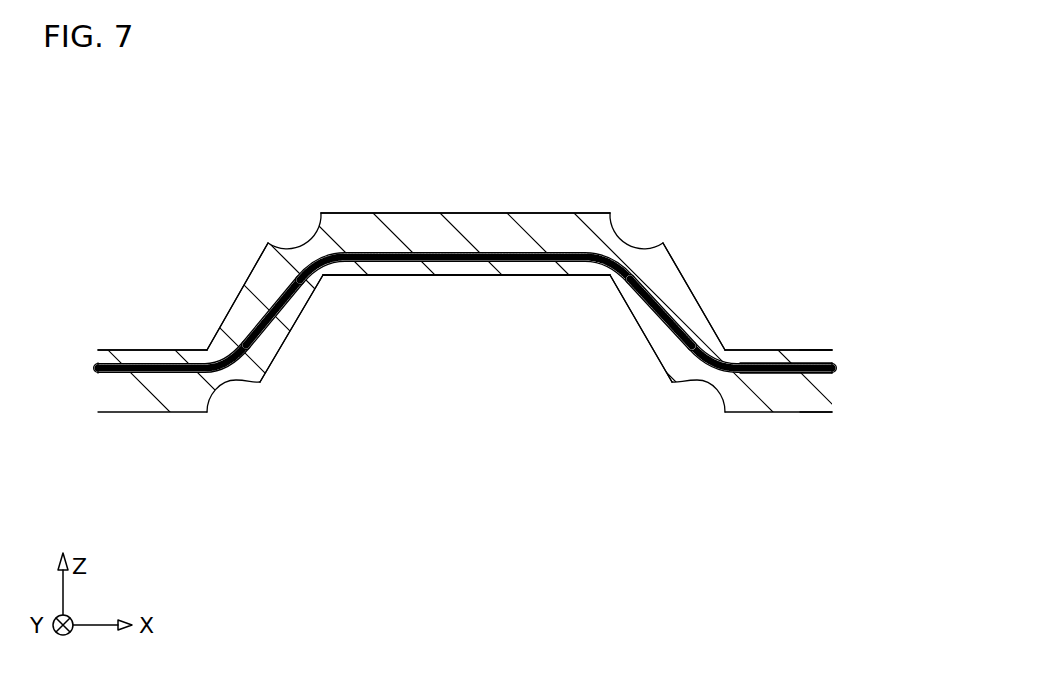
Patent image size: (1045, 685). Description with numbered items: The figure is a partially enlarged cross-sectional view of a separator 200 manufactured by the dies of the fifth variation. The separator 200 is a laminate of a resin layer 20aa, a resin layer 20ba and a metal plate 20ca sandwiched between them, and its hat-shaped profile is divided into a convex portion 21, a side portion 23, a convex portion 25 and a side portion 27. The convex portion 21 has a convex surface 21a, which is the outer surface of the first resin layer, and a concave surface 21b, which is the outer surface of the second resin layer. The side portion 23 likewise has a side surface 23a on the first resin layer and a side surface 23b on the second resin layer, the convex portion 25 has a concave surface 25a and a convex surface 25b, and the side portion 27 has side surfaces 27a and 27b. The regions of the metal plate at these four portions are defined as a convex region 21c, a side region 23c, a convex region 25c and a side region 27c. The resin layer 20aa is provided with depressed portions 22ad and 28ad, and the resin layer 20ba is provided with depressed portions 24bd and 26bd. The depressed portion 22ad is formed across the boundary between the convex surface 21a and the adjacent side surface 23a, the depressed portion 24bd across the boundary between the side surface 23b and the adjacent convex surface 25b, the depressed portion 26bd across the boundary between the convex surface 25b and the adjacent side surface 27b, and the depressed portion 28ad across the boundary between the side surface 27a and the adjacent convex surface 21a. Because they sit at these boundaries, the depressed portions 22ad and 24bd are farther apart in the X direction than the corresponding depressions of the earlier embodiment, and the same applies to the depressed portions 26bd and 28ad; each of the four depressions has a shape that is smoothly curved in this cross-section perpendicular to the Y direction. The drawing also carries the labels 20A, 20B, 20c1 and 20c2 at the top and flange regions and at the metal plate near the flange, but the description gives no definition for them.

The separator 200 is at (811, 206).
The top portion region 20A is at (489, 375).
The flange portion region 20B is at (162, 266).
The resin layer 20aa is at (846, 394).
The resin layer 20ba is at (846, 357).
The metal plate 20ca is at (848, 372).
The intermediate layer first portion 20c1 is at (773, 375).
The intermediate layer second portion 20c2 is at (808, 362).
The convex portion 21 is at (140, 392).
The convex surface 21a is at (190, 412).
The concave surface 21b is at (148, 350).
The convex region 21c is at (97, 368).
The depressed portion 22ad is at (233, 384).
The side portion 23 is at (262, 290).
The side surface 23a is at (277, 357).
The side surface 23b is at (224, 322).
The side region 23c is at (277, 318).
The depressed portion 24bd is at (287, 248).
The convex portion 25 is at (528, 232).
The concave surface 25a is at (520, 276).
The convex surface 25b is at (505, 212).
The convex region 25c is at (475, 251).
The depressed portion 26bd is at (653, 243).
The side portion 27 is at (680, 295).
The side surface 27a is at (657, 358).
The side surface 27b is at (709, 322).
The side region 27c is at (657, 322).
The depressed portion 28ad is at (708, 387).